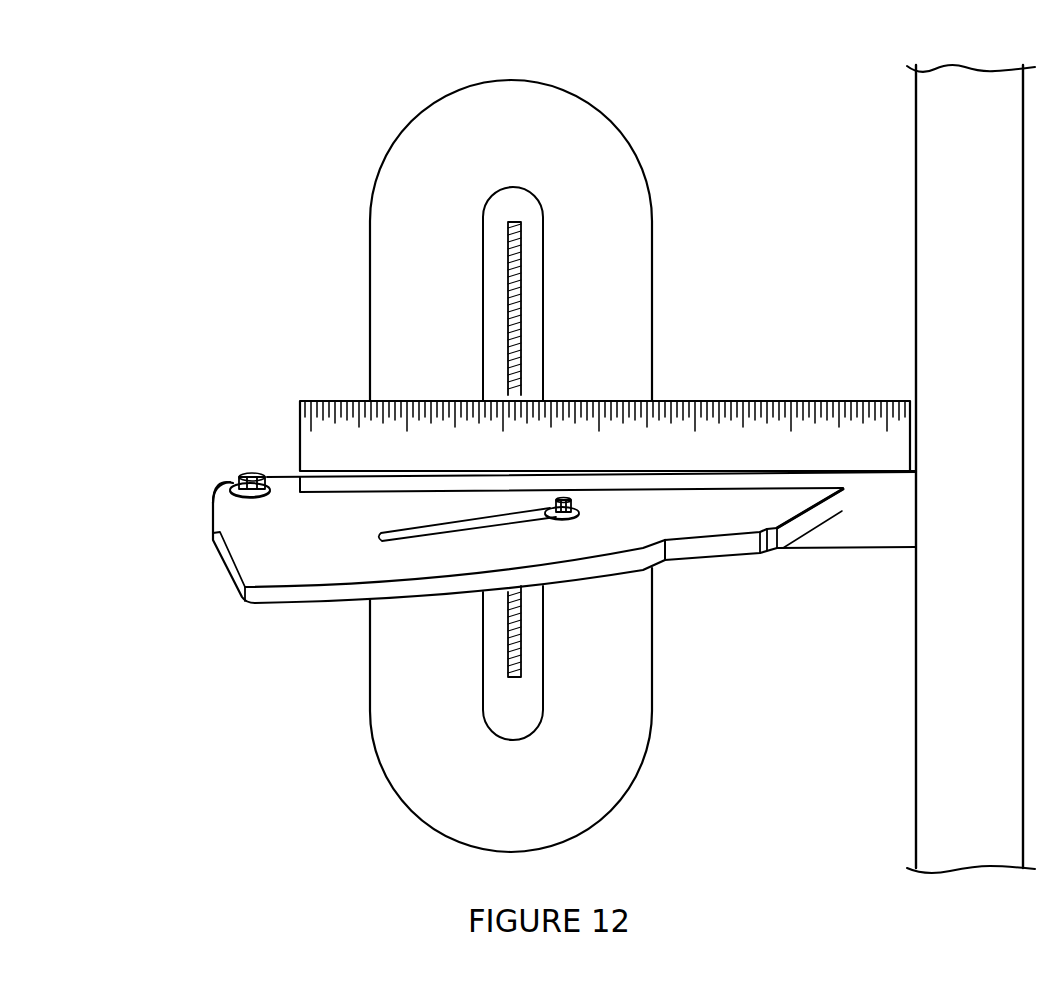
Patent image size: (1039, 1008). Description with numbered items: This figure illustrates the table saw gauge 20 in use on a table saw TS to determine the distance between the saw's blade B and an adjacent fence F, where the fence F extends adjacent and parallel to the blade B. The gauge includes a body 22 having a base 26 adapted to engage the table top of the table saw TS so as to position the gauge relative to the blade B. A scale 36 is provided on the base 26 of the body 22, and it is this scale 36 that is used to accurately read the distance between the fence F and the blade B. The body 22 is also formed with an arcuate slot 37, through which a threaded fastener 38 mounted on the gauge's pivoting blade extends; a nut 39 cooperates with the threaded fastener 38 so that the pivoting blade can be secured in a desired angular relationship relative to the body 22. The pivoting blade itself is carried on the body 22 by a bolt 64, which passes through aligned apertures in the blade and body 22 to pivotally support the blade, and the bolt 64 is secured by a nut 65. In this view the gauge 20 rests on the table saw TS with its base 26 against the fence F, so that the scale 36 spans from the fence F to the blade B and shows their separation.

The table saw gauge 20 is at (214, 580).
The body 22 is at (470, 585).
The base 26 is at (860, 525).
The scale 36 is at (660, 422).
The arcuate slot 37 is at (380, 538).
The threaded fastener 38 is at (573, 495).
The nut 39 is at (577, 513).
The bolt 64 is at (250, 475).
The nut 65 is at (233, 482).
The blade B is at (507, 297).
The fence F is at (990, 690).
The table saw TS is at (207, 763).